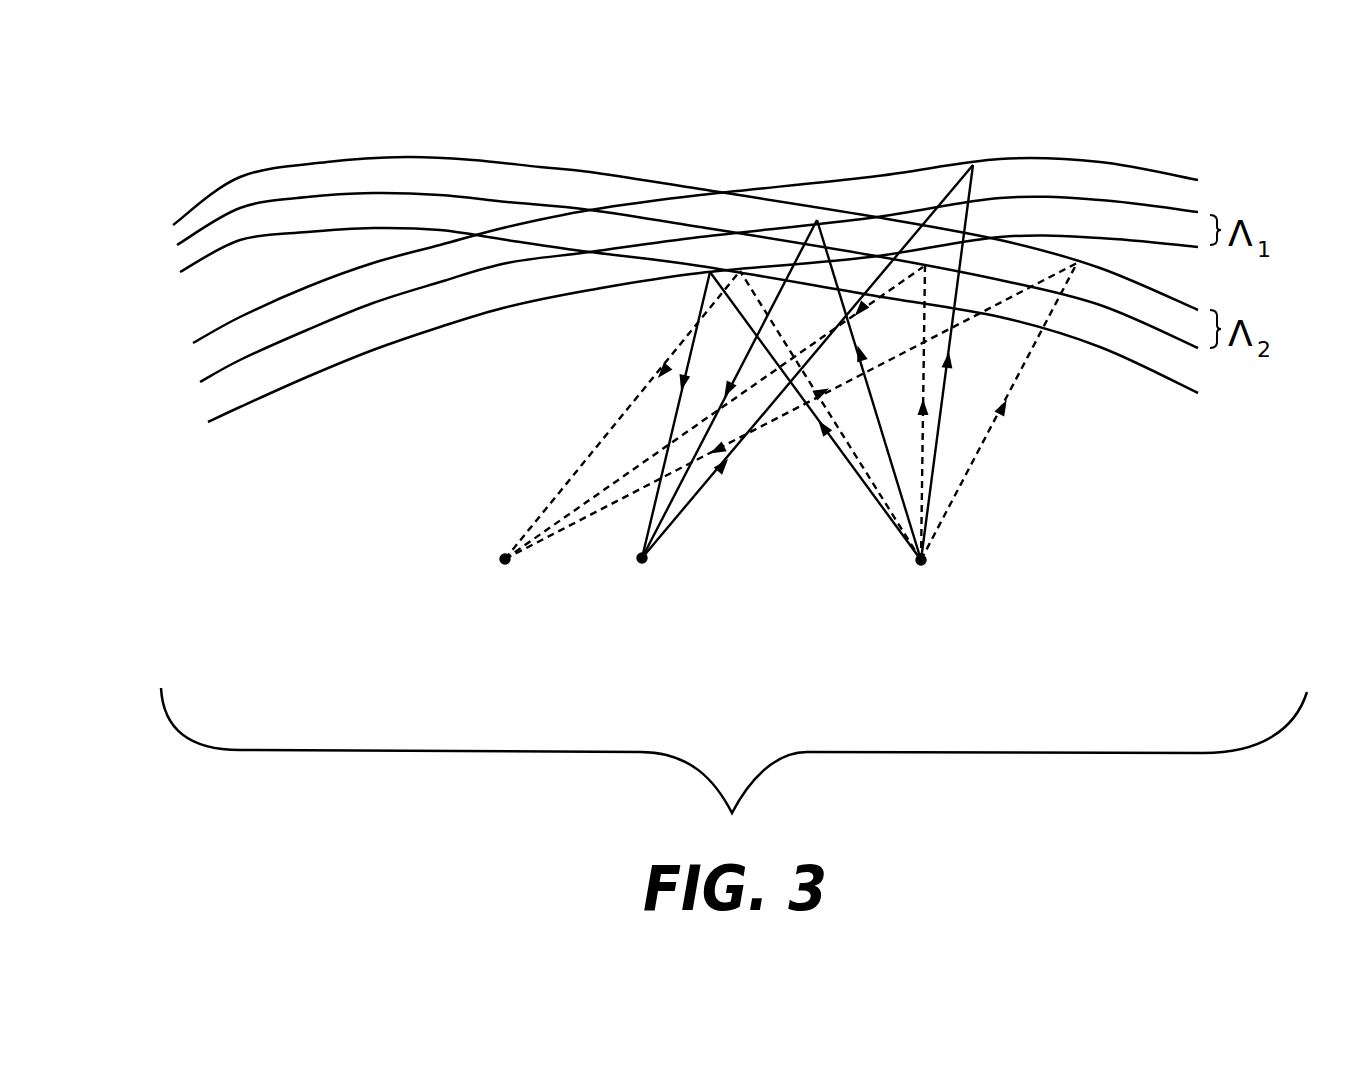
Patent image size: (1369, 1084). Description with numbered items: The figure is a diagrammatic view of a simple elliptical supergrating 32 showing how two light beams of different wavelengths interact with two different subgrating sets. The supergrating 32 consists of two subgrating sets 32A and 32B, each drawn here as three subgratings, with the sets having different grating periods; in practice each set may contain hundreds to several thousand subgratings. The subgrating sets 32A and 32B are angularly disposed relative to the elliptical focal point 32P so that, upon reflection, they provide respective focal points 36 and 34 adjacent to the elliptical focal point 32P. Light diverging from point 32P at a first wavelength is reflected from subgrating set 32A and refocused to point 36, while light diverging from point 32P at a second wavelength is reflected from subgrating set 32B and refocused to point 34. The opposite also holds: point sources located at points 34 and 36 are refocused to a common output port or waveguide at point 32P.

The elliptical supergrating 32 is at (640, 252).
The subgrating set 32A is at (210, 438).
The subgrating set 32B is at (163, 195).
The elliptical focal point 32P is at (924, 563).
The focal point 34 is at (508, 562).
The focal point 36 is at (645, 561).